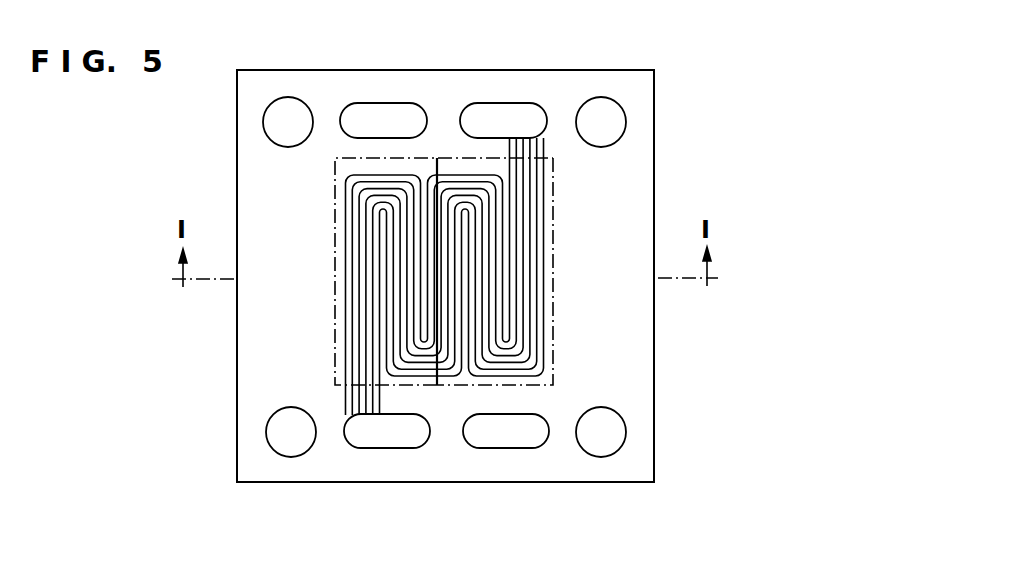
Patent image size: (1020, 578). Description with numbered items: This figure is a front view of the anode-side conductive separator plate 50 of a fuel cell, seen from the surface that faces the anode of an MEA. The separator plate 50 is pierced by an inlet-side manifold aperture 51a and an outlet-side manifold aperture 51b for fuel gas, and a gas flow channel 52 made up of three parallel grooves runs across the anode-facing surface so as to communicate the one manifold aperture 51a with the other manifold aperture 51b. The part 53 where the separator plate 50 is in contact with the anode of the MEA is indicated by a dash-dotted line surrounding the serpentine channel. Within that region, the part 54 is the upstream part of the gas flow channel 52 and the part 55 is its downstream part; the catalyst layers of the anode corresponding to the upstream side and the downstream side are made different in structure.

The anode-side separator plate 50 is at (406, 70).
The inlet-side manifold aperture 51a is at (502, 128).
The outlet-side manifold aperture 51b is at (377, 437).
The gas flow channel 52 is at (528, 336).
The part where the separator plate is in contact with the anode 53 is at (548, 174).
The upstream part of the gas flow channel 54 is at (543, 387).
The downstream part of the gas flow channel 55 is at (423, 387).